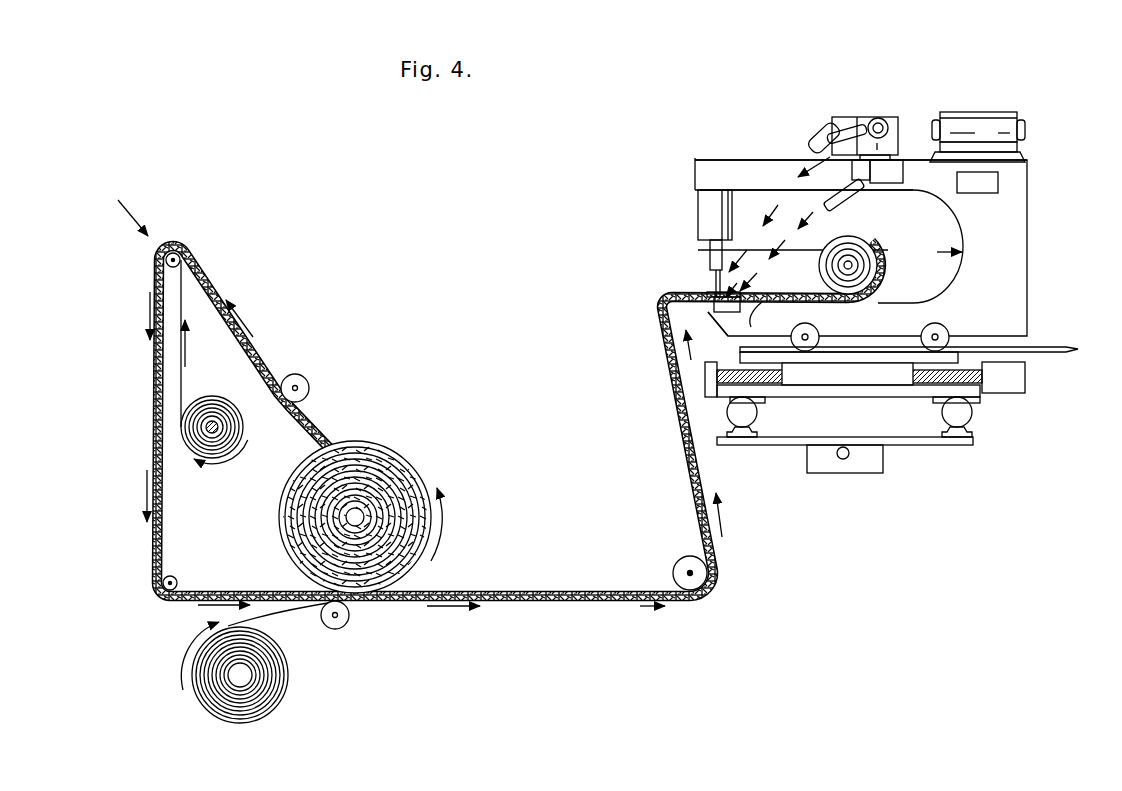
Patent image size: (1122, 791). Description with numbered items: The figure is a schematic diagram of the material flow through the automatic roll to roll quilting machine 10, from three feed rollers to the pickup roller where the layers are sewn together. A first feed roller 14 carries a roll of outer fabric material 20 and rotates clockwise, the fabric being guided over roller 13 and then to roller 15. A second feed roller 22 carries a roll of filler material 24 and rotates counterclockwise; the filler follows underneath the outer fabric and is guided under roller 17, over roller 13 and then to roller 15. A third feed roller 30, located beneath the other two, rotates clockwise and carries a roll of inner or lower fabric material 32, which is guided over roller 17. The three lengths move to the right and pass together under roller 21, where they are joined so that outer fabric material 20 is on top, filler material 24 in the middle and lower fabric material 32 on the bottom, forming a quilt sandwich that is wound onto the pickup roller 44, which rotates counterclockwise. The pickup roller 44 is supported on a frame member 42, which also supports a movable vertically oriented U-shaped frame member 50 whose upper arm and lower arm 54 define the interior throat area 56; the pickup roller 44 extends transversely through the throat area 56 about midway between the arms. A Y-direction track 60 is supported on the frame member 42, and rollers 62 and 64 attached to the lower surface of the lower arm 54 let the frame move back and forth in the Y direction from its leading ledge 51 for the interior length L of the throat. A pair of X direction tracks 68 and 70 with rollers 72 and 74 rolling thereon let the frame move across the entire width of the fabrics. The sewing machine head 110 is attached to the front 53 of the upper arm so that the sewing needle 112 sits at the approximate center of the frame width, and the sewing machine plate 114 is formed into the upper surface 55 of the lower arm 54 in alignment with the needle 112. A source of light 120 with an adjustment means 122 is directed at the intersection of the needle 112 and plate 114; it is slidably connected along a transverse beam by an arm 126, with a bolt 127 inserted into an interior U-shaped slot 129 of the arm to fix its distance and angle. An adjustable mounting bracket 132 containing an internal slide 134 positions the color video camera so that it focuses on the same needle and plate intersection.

The automatic roll to roll quilting machine 10 is at (116, 209).
The roller 13 is at (166, 268).
The first feed roller 14 is at (207, 430).
The roller 15 is at (152, 586).
The roller 17 is at (300, 380).
The outer fabric material 20 is at (226, 412).
The roller 21 is at (700, 585).
The second feed roller 22 is at (284, 500).
The filler material 24 is at (156, 407).
The third feed roller 30 is at (237, 678).
The inner or lower fabric material 32 is at (500, 604).
The supporting frame member 42 is at (1042, 266).
The pickup roller 44 is at (853, 269).
The U-shaped frame member 50 is at (1013, 238).
The leading ledge 51 is at (712, 314).
The front 53 is at (702, 173).
The lower arm 54 is at (897, 322).
The upper surface 55 is at (748, 303).
The interior throat area 56 is at (830, 256).
The Y-direction track 60 is at (1067, 348).
The roller 62 is at (809, 330).
The roller 64 is at (945, 323).
The X direction track 68 is at (742, 434).
The X direction track 70 is at (958, 439).
The roller 72 is at (755, 410).
The roller 74 is at (969, 418).
The sewing machine head 110 is at (700, 212).
The sewing needle 112 is at (715, 284).
The sewing machine plate 114 is at (706, 308).
The source of light 120 is at (817, 131).
The adjustment means 122 is at (838, 136).
The arm 126 is at (871, 122).
The bolt 127 is at (878, 143).
The interior U-shaped slot 129 is at (875, 148).
The adjustable mounting bracket 132 is at (848, 168).
The internal slide 134 is at (903, 178).